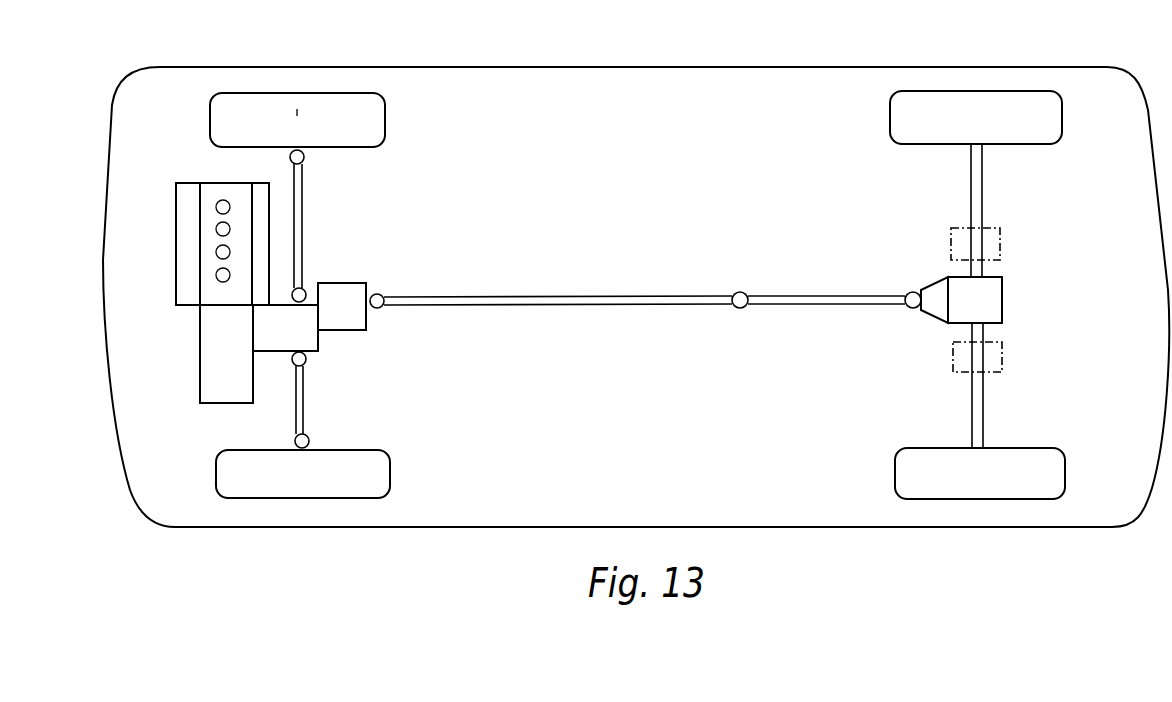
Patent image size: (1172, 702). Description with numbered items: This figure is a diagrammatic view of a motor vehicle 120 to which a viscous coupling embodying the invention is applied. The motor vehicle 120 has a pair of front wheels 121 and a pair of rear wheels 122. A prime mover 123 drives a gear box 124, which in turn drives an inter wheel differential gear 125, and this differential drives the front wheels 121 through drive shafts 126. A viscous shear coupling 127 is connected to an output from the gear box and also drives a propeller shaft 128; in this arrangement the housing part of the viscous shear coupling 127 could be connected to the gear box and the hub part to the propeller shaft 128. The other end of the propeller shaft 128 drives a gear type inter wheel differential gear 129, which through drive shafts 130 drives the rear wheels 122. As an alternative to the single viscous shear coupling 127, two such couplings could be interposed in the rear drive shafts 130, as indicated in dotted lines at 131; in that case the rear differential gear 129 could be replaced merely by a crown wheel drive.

The motor vehicle 120 is at (582, 85).
The front wheels 121 is at (363, 100).
The rear wheels 122 is at (964, 98).
The prime mover 123 is at (211, 186).
The gear box 124 is at (227, 390).
The inter wheel differential gear 125 is at (305, 337).
The drive shafts 126 is at (304, 222).
The viscous shear coupling 127 is at (367, 320).
The propeller shaft 128 is at (540, 295).
The gear type inter wheel differential gear 129 is at (993, 303).
The drive shafts 130 is at (972, 180).
The viscous couplings 131 is at (1000, 247).